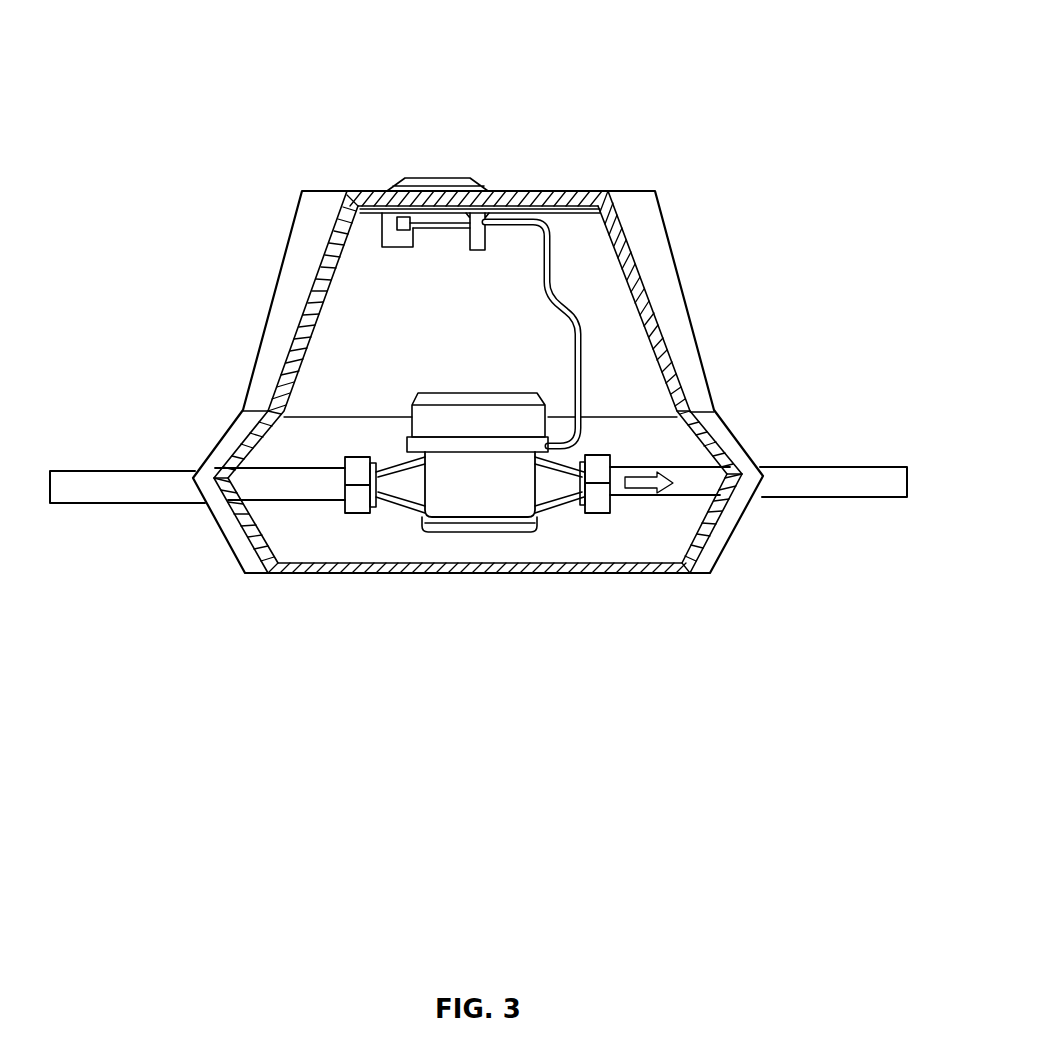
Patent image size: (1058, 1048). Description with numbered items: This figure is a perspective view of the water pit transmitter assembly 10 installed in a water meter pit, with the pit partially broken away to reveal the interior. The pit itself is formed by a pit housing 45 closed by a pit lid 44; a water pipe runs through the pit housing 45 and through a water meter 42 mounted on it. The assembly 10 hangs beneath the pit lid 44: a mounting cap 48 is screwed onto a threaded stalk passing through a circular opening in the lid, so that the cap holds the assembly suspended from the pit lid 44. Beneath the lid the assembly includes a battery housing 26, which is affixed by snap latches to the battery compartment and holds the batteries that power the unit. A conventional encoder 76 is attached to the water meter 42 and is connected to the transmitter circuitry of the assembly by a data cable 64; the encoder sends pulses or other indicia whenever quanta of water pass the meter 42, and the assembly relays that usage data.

The water pit transmitter assembly 10 is at (403, 165).
The battery housing 26 is at (390, 242).
The water meter 42 is at (478, 490).
The pit lid 44 is at (565, 190).
The pit housing 45 is at (724, 538).
The mounting cap 48 is at (468, 178).
The data cable 64 is at (570, 308).
The encoder 76 is at (452, 420).